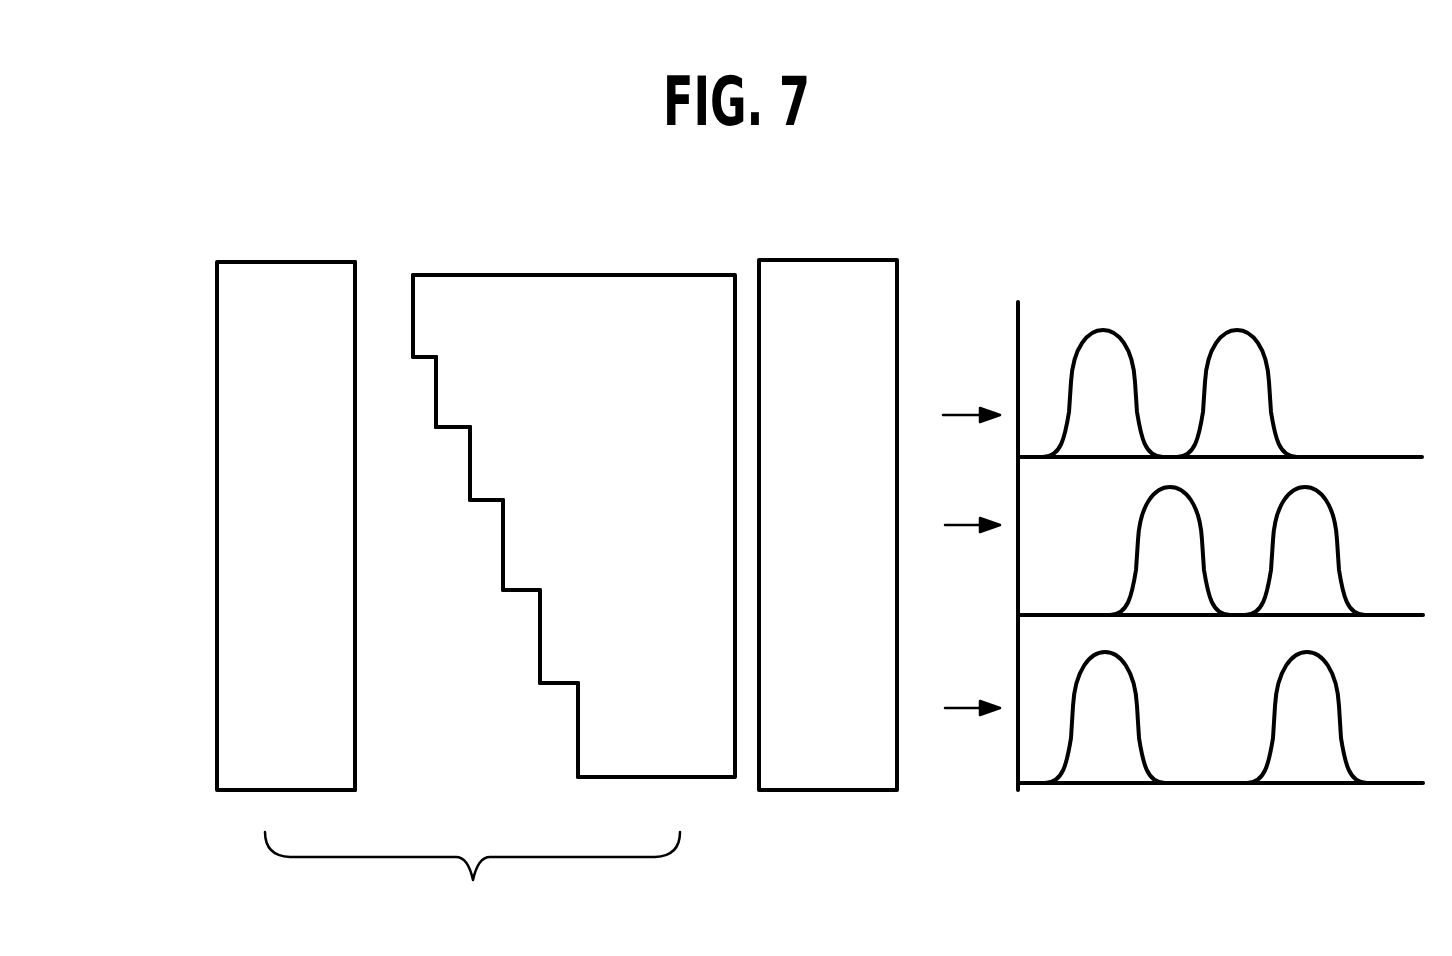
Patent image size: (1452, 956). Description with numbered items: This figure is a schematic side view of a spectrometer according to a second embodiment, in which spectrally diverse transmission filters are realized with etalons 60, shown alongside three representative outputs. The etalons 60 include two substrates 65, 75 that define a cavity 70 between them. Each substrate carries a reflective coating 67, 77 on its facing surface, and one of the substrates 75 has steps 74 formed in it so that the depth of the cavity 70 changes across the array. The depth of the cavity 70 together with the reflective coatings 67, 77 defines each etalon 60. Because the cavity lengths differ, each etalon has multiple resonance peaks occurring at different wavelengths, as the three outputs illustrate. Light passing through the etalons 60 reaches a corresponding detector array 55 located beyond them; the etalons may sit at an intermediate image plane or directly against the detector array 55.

The detector array 55 is at (897, 280).
The etalons 60 is at (472, 881).
The substrate 65 is at (252, 262).
The reflective coating 67 is at (355, 607).
The cavity 70 is at (470, 672).
The steps 74 is at (436, 392).
The substrate 75 is at (540, 275).
The reflective coating 77 is at (505, 776).